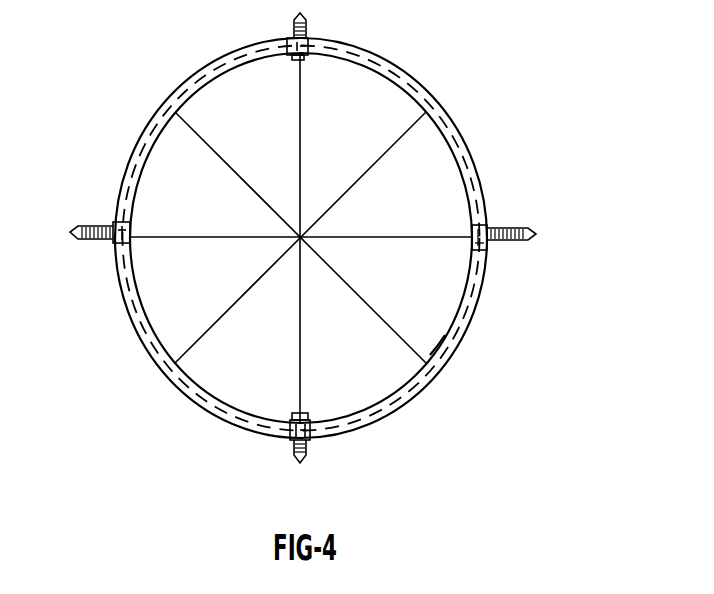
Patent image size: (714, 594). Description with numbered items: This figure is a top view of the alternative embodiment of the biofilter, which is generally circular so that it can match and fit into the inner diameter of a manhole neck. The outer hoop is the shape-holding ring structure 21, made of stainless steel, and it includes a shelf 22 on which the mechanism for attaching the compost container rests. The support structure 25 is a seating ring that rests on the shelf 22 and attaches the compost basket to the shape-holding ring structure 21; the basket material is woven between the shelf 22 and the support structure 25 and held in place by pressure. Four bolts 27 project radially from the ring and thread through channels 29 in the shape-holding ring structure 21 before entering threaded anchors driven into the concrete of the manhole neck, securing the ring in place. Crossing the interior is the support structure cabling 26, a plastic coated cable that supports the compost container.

The shape-holding ring structure 21 is at (463, 145).
The shelf 22 is at (158, 125).
The support structure 25 is at (442, 340).
The support structure cabling 26 is at (300, 237).
The bolts 27 is at (530, 227).
The channels 29 is at (476, 252).